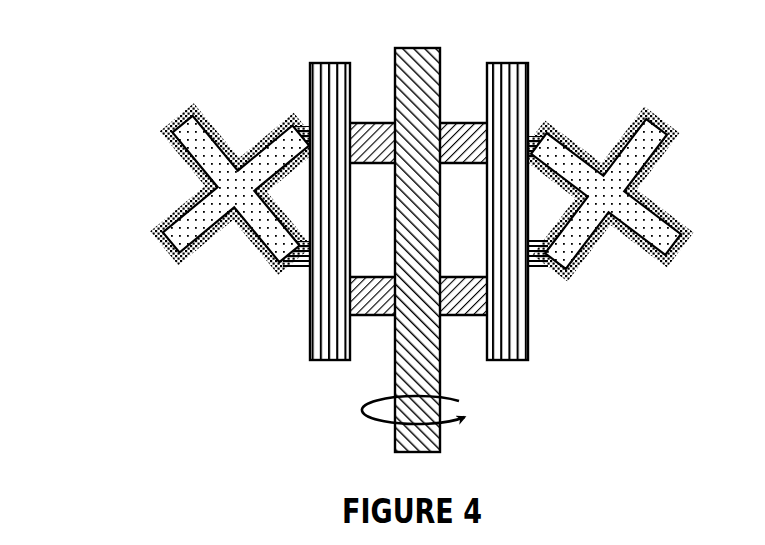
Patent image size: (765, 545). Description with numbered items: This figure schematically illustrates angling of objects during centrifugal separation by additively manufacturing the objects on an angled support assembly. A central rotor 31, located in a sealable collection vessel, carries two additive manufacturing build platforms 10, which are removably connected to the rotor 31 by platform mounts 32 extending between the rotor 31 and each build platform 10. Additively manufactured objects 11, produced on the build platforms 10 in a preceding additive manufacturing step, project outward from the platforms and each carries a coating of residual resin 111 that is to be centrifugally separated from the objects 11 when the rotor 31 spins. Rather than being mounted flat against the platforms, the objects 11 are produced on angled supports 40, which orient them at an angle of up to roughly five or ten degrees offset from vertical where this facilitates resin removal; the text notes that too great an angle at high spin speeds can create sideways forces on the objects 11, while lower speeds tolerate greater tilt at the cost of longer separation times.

The additive manufacturing build platform 10 is at (419, 211).
The additively manufactured object 11 is at (190, 227).
The coating of residual resin 111 is at (198, 107).
The rotor 31 is at (397, 358).
The platform mount 32 is at (390, 128).
The angled support 40 is at (567, 293).